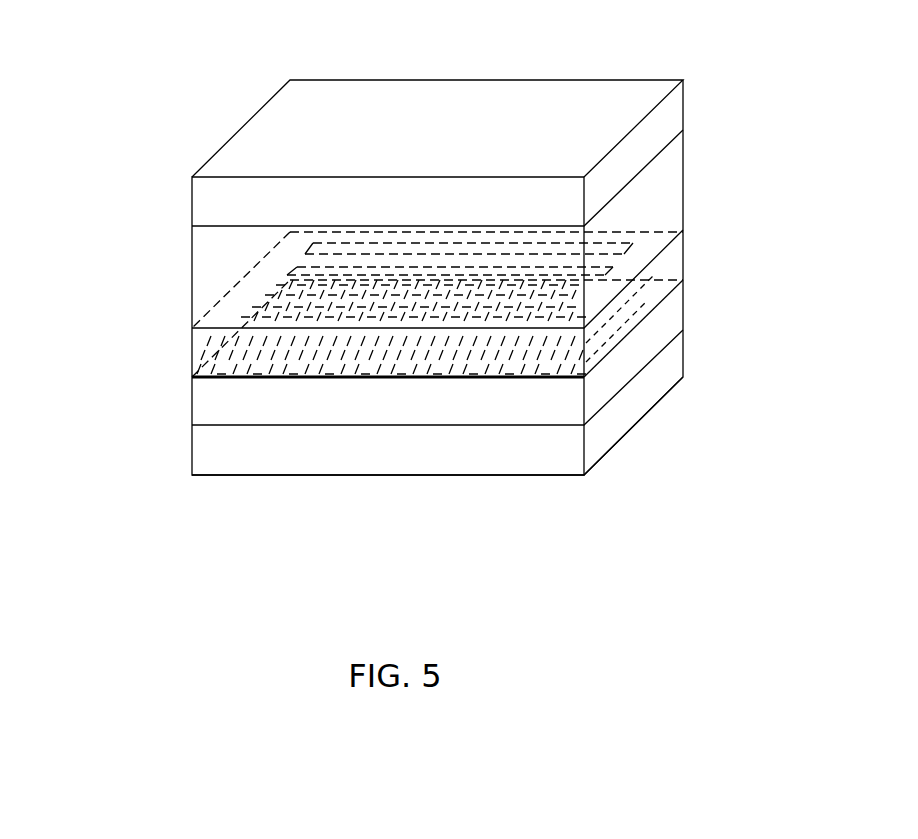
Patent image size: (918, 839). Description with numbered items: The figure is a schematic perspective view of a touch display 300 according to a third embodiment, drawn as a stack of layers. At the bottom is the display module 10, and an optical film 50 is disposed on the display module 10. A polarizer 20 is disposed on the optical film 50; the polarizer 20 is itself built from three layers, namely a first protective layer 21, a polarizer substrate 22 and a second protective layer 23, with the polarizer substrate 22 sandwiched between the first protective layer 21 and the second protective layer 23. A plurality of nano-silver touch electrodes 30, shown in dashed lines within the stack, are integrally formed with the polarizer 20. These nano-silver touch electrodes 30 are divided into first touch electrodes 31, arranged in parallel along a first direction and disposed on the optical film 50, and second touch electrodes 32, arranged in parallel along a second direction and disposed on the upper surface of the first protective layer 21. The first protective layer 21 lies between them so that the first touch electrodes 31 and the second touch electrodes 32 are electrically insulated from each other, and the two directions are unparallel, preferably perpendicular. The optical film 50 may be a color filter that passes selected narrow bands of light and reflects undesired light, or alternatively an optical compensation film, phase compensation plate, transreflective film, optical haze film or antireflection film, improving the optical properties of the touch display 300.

The touch display 300 is at (260, 34).
The display module 10 is at (671, 372).
The optical film 50 is at (671, 320).
The polarizer 20 is at (765, 108).
The first protective layer 21 is at (671, 259).
The polarizer substrate 22 is at (671, 197).
The second protective layer 23 is at (671, 121).
The nano-silver touch electrodes 30 is at (102, 232).
The first touch electrodes 31 is at (250, 360).
The second touch electrodes 32 is at (302, 266).